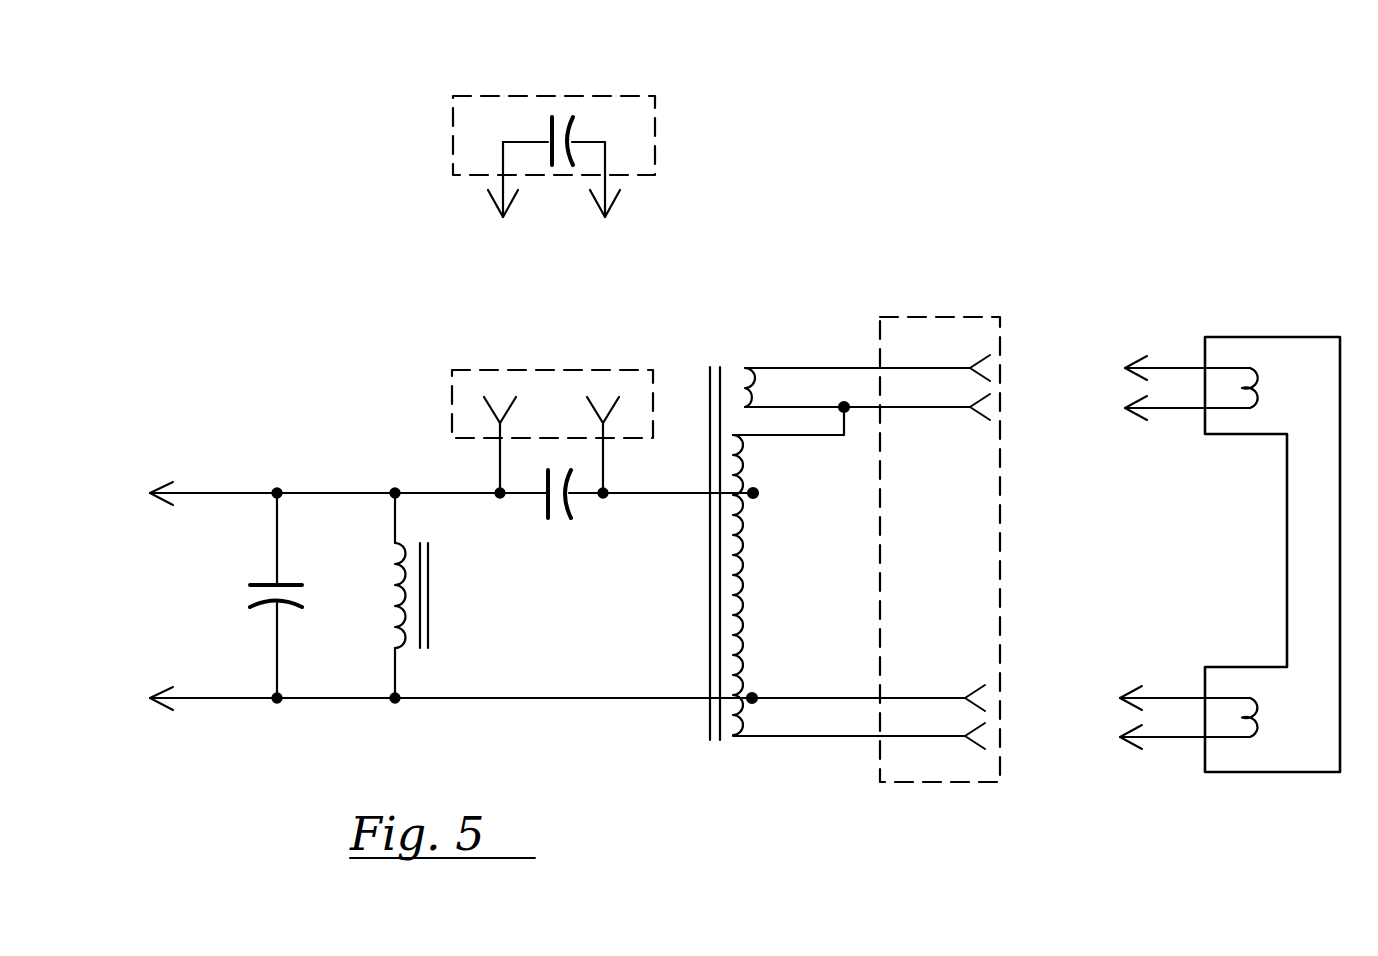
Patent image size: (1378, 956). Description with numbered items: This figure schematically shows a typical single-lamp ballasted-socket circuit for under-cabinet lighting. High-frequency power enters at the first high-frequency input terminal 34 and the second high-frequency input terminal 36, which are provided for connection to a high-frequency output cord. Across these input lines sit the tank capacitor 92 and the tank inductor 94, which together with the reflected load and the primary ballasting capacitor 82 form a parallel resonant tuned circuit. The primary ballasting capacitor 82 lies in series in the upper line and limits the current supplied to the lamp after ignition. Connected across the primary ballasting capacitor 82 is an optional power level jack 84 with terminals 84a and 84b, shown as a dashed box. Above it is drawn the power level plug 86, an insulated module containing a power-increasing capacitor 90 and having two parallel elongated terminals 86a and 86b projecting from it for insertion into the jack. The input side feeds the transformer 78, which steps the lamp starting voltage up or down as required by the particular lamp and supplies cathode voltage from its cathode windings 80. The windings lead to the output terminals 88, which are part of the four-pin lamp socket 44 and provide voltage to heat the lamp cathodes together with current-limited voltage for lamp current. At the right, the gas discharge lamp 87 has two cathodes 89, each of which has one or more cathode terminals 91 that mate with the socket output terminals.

The high-frequency input terminal #1 34 is at (170, 482).
The high-frequency input terminal #2 36 is at (170, 712).
The four-pin lamp socket 44 is at (1000, 578).
The transformer 78 is at (661, 581).
The cathode windings 80 is at (740, 368).
The primary ballasting capacitor 82 is at (548, 512).
The power level jack 84 is at (541, 393).
The terminal 84a is at (500, 418).
The terminal 84b is at (603, 418).
The power level plug 86 is at (573, 143).
The terminal 86a is at (493, 202).
The terminal 86b is at (612, 202).
The gas discharge lamp 87 is at (1287, 572).
The output terminals 88 is at (985, 368).
The cathodes 89 is at (1262, 375).
The power-increasing capacitor 90 is at (548, 128).
The cathode terminals 91 is at (1175, 366).
The tank capacitor 92 is at (265, 583).
The tank inductor 94 is at (432, 622).